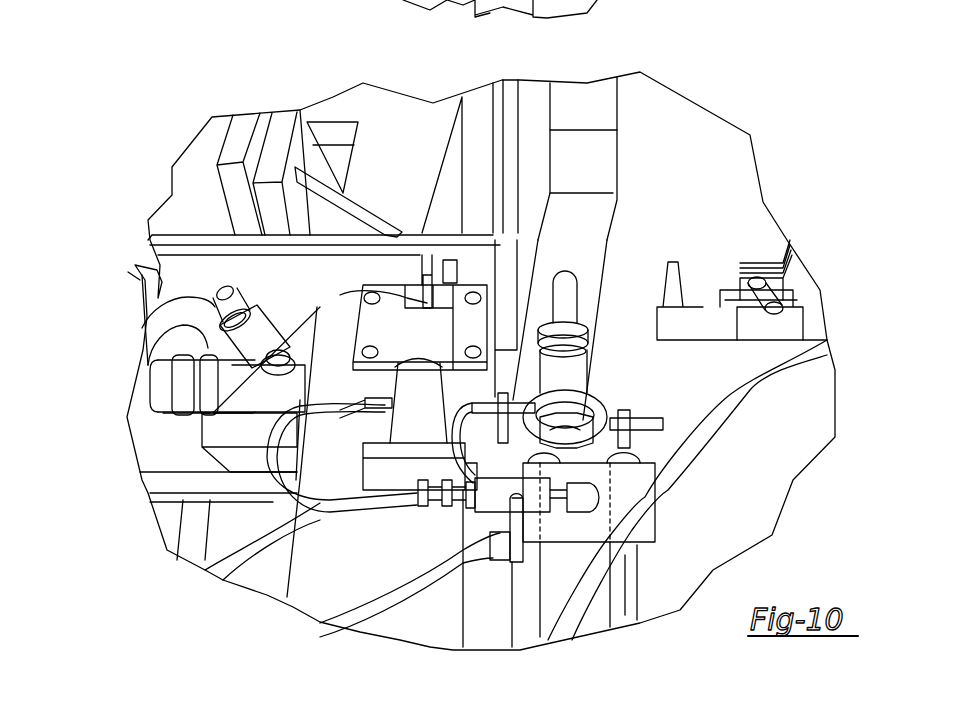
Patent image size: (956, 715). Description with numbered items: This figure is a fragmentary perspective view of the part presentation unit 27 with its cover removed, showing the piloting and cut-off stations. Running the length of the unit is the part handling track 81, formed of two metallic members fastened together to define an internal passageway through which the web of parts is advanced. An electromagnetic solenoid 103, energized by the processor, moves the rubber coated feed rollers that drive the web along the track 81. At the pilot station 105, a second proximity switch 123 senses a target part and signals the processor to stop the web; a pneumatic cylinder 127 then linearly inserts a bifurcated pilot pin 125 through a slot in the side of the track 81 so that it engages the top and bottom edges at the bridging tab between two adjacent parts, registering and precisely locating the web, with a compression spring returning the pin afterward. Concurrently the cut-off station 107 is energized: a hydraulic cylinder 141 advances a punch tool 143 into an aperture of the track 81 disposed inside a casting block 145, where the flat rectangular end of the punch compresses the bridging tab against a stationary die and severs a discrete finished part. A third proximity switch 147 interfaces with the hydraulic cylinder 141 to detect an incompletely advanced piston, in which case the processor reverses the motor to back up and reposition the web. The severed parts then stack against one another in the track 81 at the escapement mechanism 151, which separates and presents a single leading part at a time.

The part presentation unit 27 is at (110, 468).
The part handling track 81 is at (173, 240).
The electromagnetic solenoid 103 is at (145, 280).
The pilot station 105 is at (317, 97).
The cut-off station 107 is at (587, 72).
The second proximity switch 123 is at (447, 272).
The pilot pin 125 is at (160, 412).
The pneumatic cylinder 127 is at (417, 433).
The hydraulic cylinder 141 is at (572, 473).
The punch tool 143 is at (567, 375).
The casting block 145 is at (590, 157).
The third proximity switch 147 is at (640, 413).
The escapement mechanism 151 is at (780, 328).